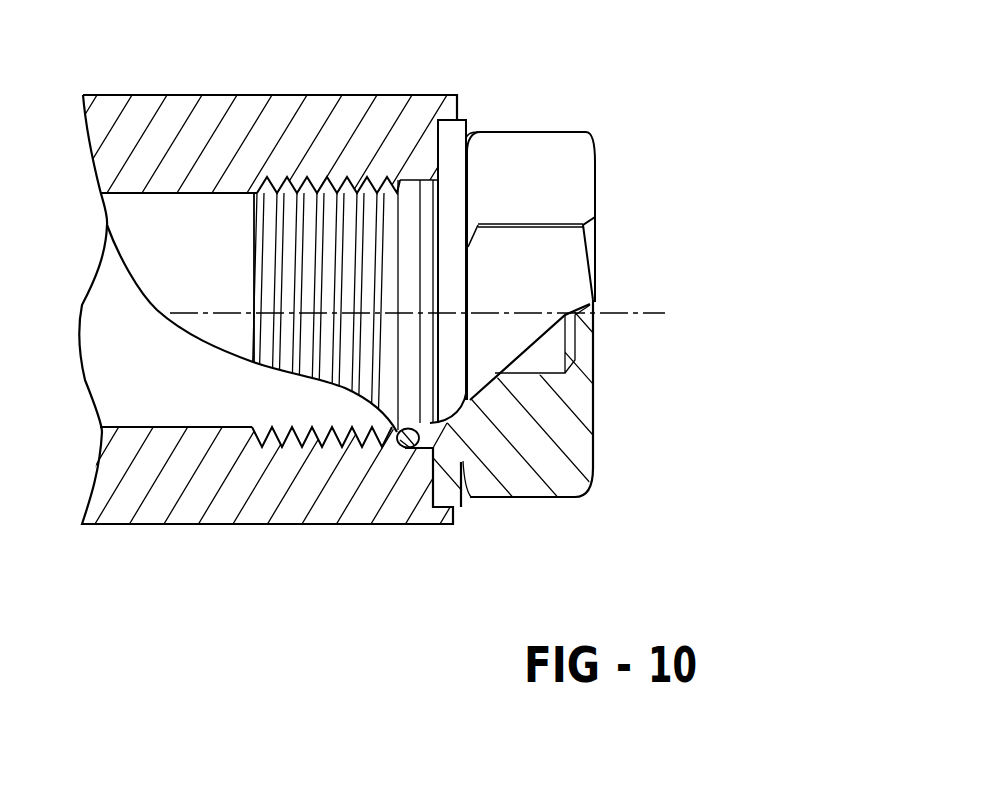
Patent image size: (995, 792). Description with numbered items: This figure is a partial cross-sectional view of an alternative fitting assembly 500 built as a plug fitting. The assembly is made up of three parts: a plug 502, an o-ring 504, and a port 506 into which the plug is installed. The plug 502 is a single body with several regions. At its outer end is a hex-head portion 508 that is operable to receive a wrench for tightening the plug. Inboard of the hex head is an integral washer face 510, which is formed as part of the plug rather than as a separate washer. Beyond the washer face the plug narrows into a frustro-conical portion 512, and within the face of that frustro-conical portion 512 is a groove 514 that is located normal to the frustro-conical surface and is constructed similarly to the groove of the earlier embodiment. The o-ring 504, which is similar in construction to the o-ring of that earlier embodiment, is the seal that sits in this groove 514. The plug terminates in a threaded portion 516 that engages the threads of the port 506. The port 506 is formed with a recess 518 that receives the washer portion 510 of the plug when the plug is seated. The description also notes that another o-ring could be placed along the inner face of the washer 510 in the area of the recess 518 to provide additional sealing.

The fitting assembly 500 is at (668, 277).
The plug 502 is at (560, 450).
The o-ring 504 is at (405, 448).
The port 506 is at (162, 507).
The hex-head portion 508 is at (563, 146).
The integral washer face 510 is at (470, 127).
The frustro-conical portion 512 is at (404, 190).
The groove 514 is at (411, 453).
The threaded portion 516 is at (304, 177).
The recess 518 is at (462, 502).